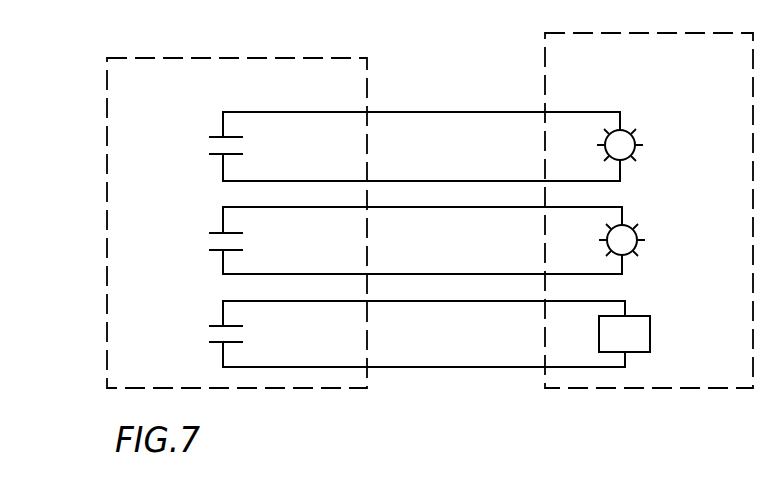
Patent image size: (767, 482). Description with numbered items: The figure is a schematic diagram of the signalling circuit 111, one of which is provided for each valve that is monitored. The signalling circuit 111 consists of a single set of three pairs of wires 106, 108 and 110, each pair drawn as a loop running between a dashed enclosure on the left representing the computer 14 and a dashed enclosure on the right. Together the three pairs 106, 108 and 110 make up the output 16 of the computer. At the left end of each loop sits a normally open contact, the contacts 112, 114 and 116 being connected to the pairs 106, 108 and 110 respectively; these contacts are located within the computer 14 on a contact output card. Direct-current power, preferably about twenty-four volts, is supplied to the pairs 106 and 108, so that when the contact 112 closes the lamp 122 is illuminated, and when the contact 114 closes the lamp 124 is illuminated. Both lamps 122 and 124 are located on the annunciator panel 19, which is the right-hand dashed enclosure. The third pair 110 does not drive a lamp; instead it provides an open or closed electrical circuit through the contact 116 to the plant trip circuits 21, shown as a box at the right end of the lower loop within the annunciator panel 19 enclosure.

The computer 14 is at (188, 56).
The annunciator panel 19 is at (692, 33).
The signalling circuit 111 is at (455, 92).
The output 16 is at (505, 370).
The normally open contact 112 is at (218, 136).
The normally open contact 114 is at (218, 232).
The normally open contact 116 is at (218, 325).
The pair of wires 106 is at (307, 113).
The pair of wires 108 is at (309, 208).
The pair of wires 110 is at (309, 302).
The lamp 122 is at (634, 133).
The lamp 124 is at (636, 228).
The plant trip circuits 21 is at (645, 323).